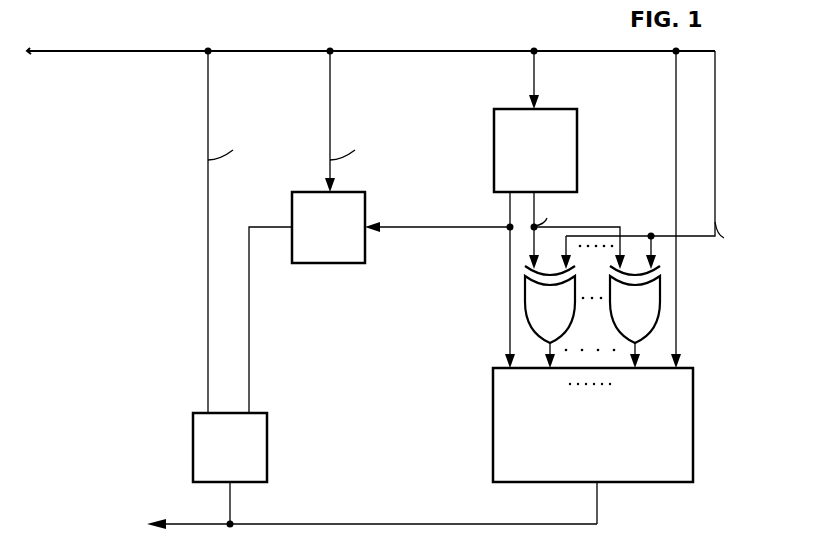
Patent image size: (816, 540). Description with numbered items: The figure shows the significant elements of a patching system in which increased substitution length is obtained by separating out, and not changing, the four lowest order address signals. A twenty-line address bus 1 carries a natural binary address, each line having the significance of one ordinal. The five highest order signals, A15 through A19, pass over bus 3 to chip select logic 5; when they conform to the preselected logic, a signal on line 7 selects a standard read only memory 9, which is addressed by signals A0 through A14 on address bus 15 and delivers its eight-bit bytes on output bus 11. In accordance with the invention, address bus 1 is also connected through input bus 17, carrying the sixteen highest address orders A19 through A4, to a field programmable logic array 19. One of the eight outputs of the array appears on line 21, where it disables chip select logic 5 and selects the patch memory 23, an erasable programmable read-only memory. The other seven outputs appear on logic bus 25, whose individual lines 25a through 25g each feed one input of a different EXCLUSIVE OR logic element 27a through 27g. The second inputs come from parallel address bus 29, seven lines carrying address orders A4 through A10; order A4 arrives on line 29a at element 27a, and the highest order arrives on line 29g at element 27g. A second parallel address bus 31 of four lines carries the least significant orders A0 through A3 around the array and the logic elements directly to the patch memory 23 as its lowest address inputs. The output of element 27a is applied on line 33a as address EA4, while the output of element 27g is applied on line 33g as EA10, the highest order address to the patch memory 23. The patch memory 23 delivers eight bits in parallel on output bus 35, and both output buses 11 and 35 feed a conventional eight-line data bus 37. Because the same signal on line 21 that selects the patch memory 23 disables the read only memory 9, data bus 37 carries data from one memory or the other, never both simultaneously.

The address bus 1 is at (408, 53).
The bus 3 is at (330, 90).
The chip select logic 5 is at (365, 198).
The line 7 is at (274, 229).
The read only memory (ROM) 9 is at (267, 440).
The output bus 11 is at (231, 495).
The address bus 15 is at (208, 90).
The input bus 17 is at (534, 62).
The field programmable logic array (PLA) 19 is at (572, 129).
The line 21 is at (510, 196).
The patch memory (EPROM) 23 is at (693, 432).
The logic bus 25 is at (532, 203).
The line 25g is at (533, 241).
The line 25a is at (624, 256).
The EXCLUSIVE OR logic element 27g is at (528, 310).
The EXCLUSIVE OR logic element 27a is at (653, 295).
The parallel address bus 29 is at (715, 145).
The line 29g is at (566, 246).
The line 29a is at (652, 247).
The second parallel address bus 31 is at (674, 133).
The line 33g is at (548, 345).
The line 33a is at (636, 346).
The output bus 35 is at (595, 494).
The data bus 37 is at (387, 524).